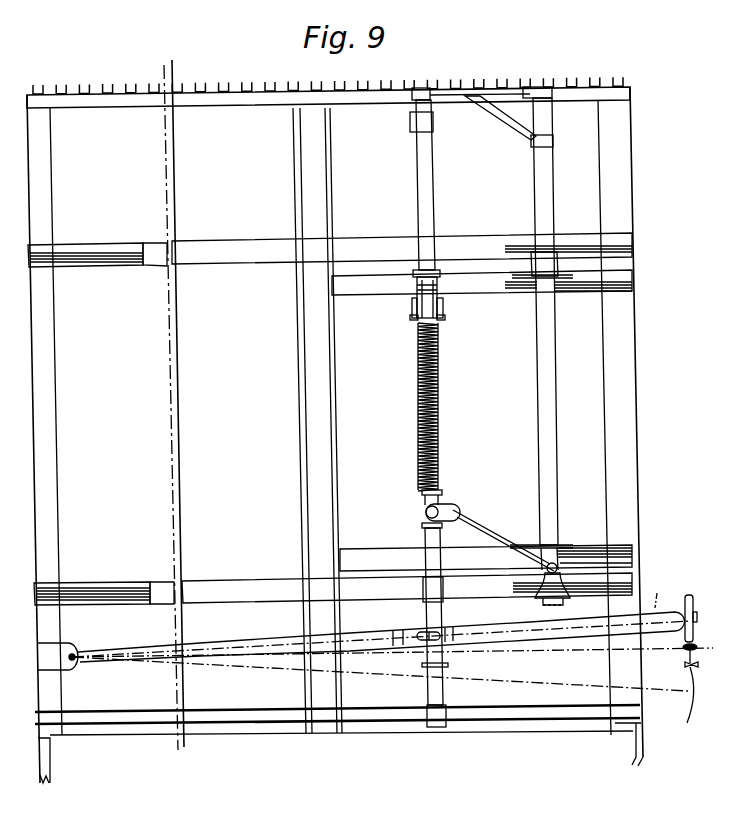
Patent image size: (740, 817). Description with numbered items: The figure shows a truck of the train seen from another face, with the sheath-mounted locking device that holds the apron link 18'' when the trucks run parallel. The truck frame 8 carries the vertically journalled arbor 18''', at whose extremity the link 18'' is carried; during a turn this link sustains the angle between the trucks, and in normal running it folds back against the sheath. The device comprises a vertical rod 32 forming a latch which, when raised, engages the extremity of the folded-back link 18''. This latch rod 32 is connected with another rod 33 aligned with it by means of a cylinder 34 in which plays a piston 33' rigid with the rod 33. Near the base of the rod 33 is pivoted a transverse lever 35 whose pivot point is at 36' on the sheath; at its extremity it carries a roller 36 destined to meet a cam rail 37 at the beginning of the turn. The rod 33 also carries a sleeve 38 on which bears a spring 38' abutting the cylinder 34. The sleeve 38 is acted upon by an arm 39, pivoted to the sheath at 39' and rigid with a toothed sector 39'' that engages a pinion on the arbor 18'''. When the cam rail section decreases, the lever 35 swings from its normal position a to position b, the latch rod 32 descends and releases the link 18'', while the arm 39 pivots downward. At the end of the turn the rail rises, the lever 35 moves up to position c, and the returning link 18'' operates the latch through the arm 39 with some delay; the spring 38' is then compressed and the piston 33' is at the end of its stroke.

The frame 8 is at (335, 421).
The link 18'' is at (494, 118).
The arbor 18''' is at (549, 328).
The vertical rod 32 is at (420, 218).
The rod 33 is at (412, 627).
The piston 33' is at (400, 317).
The cylinder 34 is at (440, 301).
The lever 35 is at (498, 636).
The roller 36 is at (684, 614).
The pivot point 36' is at (75, 646).
The cam rail 37 is at (686, 708).
The sleeve 38 is at (423, 509).
The spring 38' is at (445, 407).
The arm 39 is at (503, 540).
The pivot 39' is at (571, 549).
The toothed sector 39'' is at (531, 596).
The normal position a is at (392, 657).
The position b is at (380, 685).
The position c is at (652, 592).